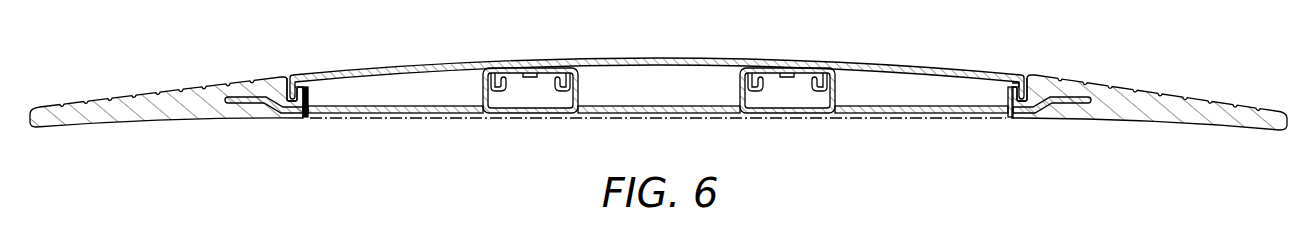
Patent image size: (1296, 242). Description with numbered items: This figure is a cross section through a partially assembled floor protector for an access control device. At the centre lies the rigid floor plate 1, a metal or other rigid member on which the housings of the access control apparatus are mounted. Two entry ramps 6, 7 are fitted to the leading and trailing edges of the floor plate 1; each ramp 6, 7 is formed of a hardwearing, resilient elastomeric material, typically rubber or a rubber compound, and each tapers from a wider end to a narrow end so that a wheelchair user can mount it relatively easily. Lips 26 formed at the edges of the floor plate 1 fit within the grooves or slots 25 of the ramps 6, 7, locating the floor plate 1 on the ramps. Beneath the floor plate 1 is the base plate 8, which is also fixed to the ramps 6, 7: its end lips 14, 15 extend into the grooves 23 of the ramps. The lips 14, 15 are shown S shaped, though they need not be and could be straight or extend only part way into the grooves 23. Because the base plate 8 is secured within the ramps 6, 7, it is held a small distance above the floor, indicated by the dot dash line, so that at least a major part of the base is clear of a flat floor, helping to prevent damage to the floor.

The floor plate 1 is at (873, 63).
The entry ramp 6 is at (179, 123).
The entry ramp 7 is at (1137, 121).
The base plate 8 is at (400, 120).
The end lip 14 is at (288, 120).
The end lip 15 is at (1026, 119).
The groove 23 is at (250, 105).
The slot 25 is at (1013, 83).
The lip 26 is at (290, 73).